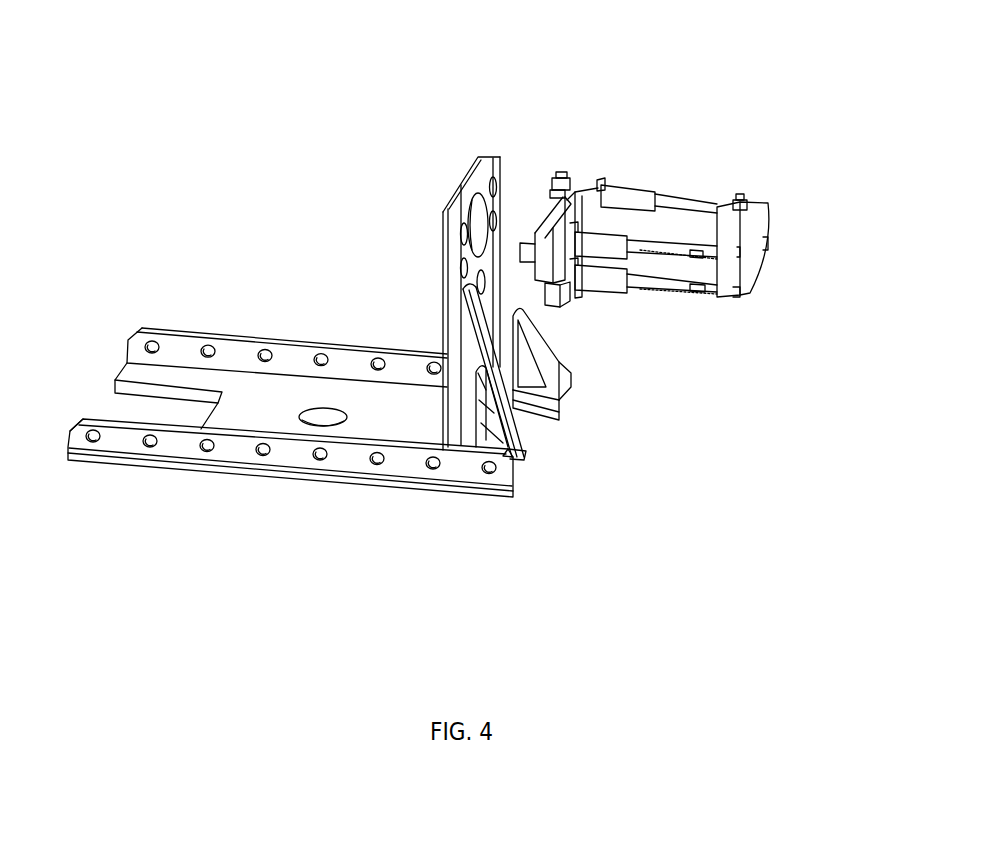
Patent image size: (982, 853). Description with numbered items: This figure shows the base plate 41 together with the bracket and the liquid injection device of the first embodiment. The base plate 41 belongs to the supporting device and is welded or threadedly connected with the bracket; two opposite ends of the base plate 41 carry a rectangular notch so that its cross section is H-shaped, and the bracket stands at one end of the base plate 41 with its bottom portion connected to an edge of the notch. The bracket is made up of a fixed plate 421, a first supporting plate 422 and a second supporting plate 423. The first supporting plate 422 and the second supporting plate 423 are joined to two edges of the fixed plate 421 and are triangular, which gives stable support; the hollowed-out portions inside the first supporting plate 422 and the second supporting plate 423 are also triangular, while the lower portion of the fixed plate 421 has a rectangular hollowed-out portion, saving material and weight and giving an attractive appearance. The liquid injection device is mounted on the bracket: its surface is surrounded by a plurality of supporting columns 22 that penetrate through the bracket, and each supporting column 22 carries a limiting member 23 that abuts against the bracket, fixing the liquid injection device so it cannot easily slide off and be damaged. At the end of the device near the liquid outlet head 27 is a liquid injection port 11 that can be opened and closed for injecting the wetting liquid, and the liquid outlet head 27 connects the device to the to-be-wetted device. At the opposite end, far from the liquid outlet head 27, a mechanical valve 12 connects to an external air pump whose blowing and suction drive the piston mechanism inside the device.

The base plate 41 is at (323, 483).
The fixed plate 421 is at (437, 213).
The first supporting plate 422 is at (533, 443).
The second supporting plate 423 is at (562, 402).
The liquid outlet head 27 is at (482, 163).
The liquid injection port 11 is at (550, 187).
The mechanical valve 12 is at (740, 197).
The supporting column 22 is at (673, 290).
The limiting member 23 is at (580, 297).